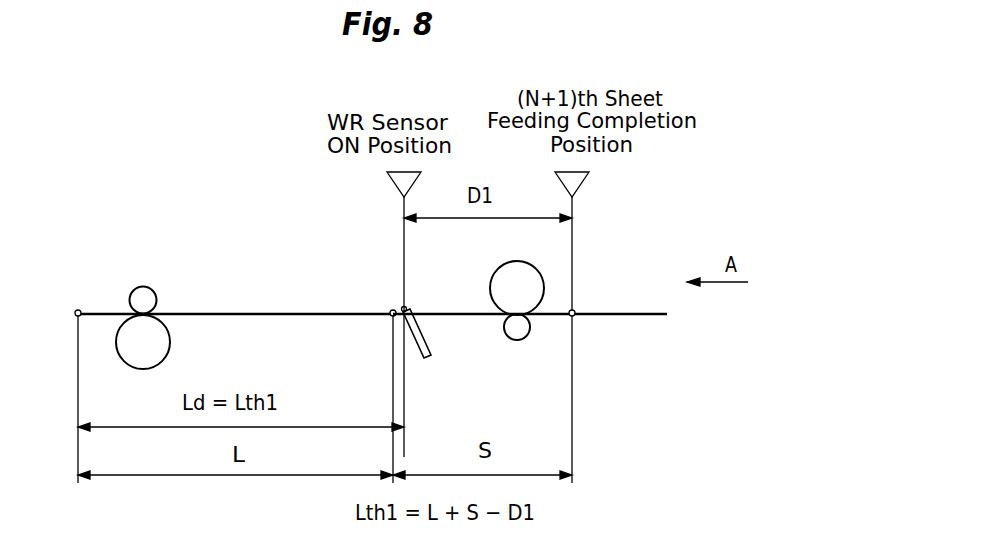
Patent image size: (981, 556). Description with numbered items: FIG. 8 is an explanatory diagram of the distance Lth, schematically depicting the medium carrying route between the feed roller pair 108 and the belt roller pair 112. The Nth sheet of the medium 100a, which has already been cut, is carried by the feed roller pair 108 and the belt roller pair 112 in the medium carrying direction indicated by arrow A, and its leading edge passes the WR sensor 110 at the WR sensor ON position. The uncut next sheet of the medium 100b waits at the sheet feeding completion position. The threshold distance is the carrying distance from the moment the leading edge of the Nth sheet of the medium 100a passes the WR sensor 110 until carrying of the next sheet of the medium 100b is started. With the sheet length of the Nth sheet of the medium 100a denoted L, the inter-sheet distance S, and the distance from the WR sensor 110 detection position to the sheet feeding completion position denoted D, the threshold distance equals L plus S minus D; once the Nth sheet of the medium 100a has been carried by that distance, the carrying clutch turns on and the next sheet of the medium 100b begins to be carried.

The Nth sheet of the medium 100a is at (231, 312).
The (N+1)th sheet of the medium 100b is at (655, 317).
The feed roller pair 108 is at (492, 278).
The WR sensor 110 is at (430, 358).
The belt roller pair 112 is at (170, 348).